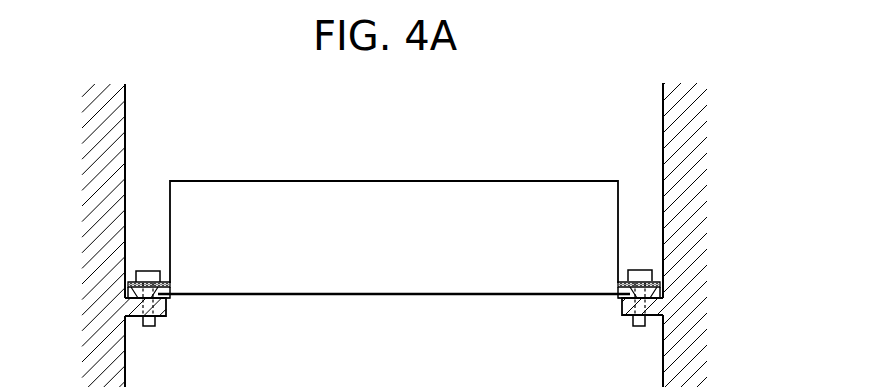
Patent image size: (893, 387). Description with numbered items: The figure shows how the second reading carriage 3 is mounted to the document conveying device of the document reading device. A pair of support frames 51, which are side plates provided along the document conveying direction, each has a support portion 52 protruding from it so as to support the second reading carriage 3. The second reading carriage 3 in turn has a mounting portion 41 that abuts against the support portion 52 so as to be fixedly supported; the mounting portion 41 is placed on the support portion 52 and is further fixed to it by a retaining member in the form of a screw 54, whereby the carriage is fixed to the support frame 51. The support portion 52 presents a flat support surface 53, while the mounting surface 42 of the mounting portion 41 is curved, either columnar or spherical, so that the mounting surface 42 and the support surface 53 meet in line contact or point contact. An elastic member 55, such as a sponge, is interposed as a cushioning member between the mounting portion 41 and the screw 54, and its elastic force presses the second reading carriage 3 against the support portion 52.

The second reading carriage 3 is at (477, 170).
The mounting portion 41 is at (127, 289).
The mounting surface 42 is at (135, 302).
The support frame 51 is at (126, 93).
The support portion 52 is at (167, 312).
The support surface 53 is at (168, 300).
The screw 54 is at (148, 270).
The elastic member 55 is at (127, 281).